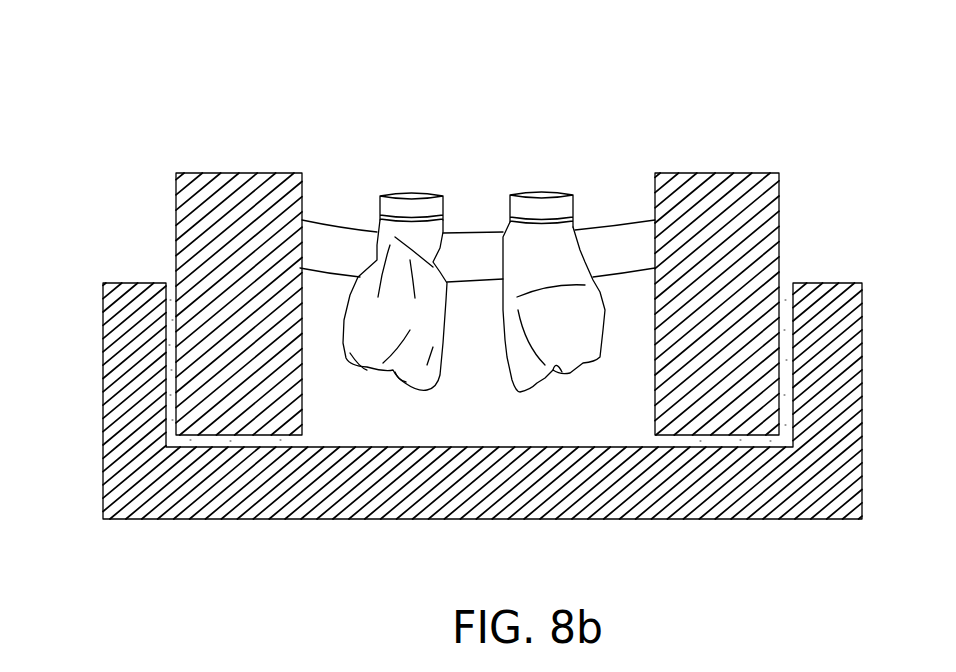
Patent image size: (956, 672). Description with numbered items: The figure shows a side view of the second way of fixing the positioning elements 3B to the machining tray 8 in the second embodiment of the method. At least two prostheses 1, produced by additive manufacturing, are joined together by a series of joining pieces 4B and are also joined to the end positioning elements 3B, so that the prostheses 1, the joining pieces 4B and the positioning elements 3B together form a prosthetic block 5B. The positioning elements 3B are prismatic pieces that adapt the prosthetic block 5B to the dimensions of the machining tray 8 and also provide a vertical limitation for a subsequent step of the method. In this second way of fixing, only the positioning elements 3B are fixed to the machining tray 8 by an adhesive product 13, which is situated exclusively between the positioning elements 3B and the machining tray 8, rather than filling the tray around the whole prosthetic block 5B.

The prosthesis 1 is at (400, 307).
The positioning element 3B is at (237, 173).
The joining piece 4B is at (347, 247).
The prosthetic block 5B is at (447, 147).
The machining tray 8 is at (737, 487).
The adhesive product 13 is at (177, 352).